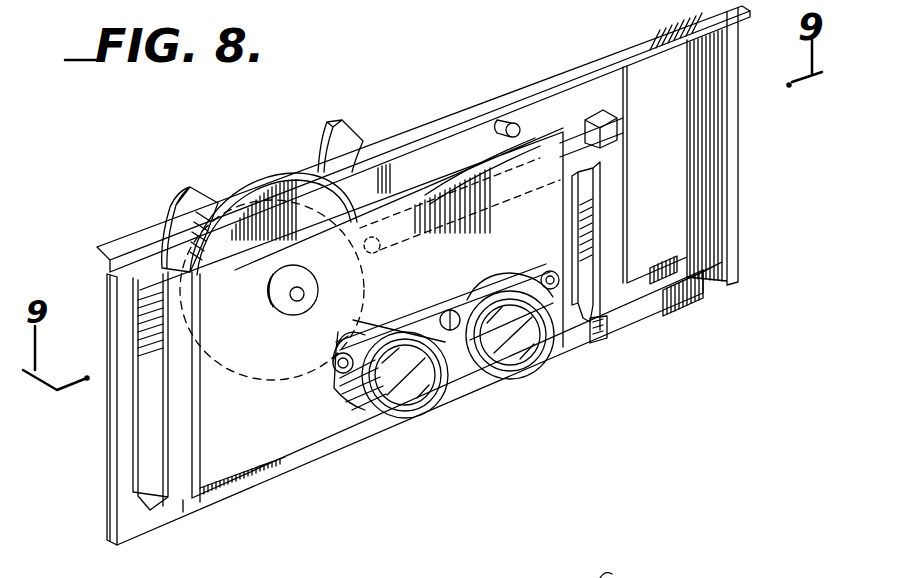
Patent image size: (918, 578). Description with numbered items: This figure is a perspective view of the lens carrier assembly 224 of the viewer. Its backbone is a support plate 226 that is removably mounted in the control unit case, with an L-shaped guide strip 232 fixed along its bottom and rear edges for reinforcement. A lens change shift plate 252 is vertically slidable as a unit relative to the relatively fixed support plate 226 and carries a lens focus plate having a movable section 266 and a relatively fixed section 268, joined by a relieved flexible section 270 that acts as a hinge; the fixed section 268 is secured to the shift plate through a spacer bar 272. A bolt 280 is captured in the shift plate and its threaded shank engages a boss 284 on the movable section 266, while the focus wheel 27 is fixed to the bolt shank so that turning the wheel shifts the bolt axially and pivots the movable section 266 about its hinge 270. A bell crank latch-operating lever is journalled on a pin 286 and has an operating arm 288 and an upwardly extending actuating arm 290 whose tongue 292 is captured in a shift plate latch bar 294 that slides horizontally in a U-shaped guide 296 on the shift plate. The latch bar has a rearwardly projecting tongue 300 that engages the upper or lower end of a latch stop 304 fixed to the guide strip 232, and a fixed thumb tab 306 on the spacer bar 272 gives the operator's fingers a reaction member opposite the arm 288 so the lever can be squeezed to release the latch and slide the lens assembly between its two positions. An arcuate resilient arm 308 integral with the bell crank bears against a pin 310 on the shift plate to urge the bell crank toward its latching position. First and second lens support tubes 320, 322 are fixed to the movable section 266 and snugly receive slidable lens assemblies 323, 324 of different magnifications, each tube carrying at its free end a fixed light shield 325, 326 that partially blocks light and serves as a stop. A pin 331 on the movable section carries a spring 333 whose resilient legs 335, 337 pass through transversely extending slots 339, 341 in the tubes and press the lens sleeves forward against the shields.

The focus wheel 27 is at (268, 195).
The lens carrier assembly 224 is at (440, 334).
The support plate 226 is at (728, 163).
The L-shaped guide strip 232 is at (127, 535).
The lens change shift plate 252 is at (546, 98).
The movable section of lens focus plate 266 is at (291, 453).
The fixed section of lens focus plate 268 is at (183, 514).
The relieved flexible section 270 is at (198, 500).
The spacer bar 272 is at (137, 337).
The bolt 280 is at (305, 293).
The boss 284 is at (288, 318).
The pin 286 is at (376, 256).
The operating arm 288 is at (349, 140).
The actuating arm 290 is at (586, 138).
The tongue 292 is at (623, 138).
The shift plate latch bar 294 is at (623, 158).
The U-shaped guide 296 is at (614, 234).
The rearwardly projecting tongue 300 is at (598, 344).
The latch stop 304 is at (657, 316).
The fixed thumb tab 306 is at (178, 210).
The arcuate resilient arm 308 is at (480, 145).
The pin 310 is at (502, 120).
The first lens support tube 320 is at (352, 410).
The second lens support tube 322 is at (500, 272).
The lens assembly 323 is at (408, 412).
The lens assembly 324 is at (510, 355).
The fixed light shield 325 is at (412, 368).
The fixed light shield 326 is at (458, 386).
The pin 331 is at (430, 330).
The spring 333 is at (415, 330).
The spring leg 335 is at (342, 388).
The spring leg 337 is at (544, 262).
The transversely extending slot 339 is at (398, 330).
The transversely extending slot 341 is at (490, 268).